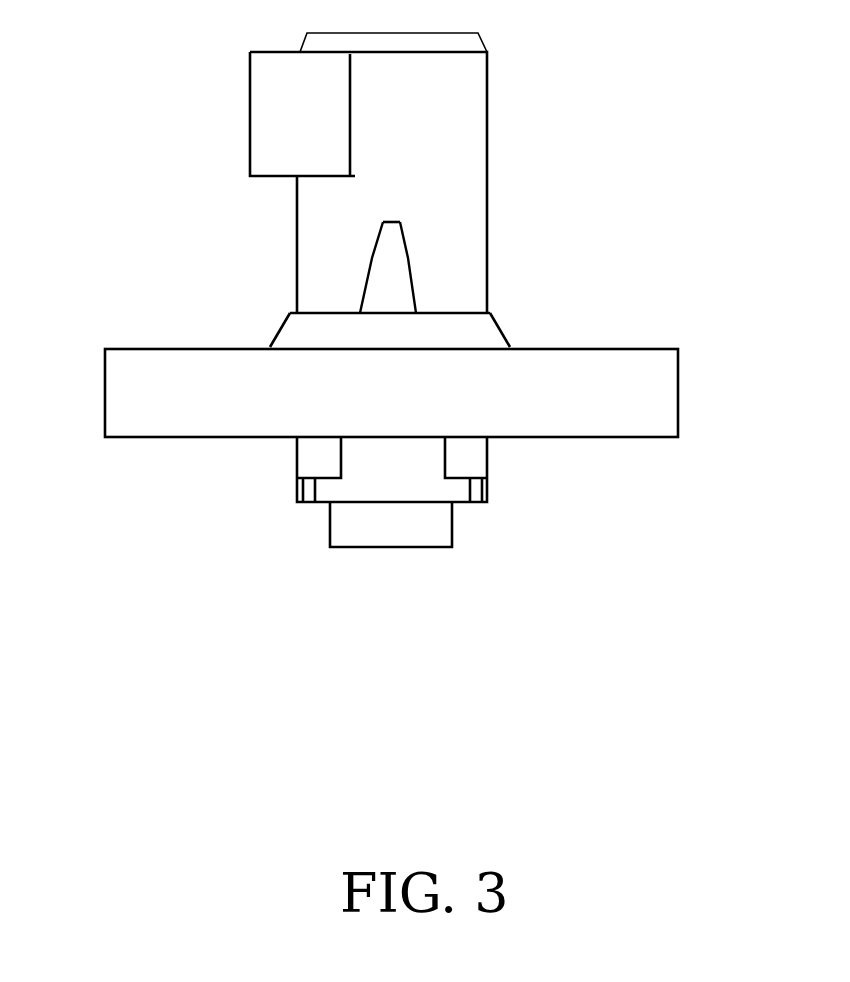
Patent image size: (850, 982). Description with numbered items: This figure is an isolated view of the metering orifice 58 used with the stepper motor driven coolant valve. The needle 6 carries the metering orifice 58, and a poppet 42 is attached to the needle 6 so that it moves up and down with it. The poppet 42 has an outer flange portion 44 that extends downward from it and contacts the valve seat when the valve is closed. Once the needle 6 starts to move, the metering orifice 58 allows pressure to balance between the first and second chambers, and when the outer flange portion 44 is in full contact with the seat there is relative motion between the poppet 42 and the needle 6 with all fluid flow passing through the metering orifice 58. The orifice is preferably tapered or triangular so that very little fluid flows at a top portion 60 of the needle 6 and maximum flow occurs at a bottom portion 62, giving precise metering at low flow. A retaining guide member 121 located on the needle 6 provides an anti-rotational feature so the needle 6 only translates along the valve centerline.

The retaining guide member 121 is at (308, 117).
The needle 6 is at (500, 222).
The top portion 60 is at (400, 222).
The metering orifice 58 is at (393, 268).
The poppet 42 is at (632, 373).
The outer flange portion 44 is at (266, 415).
The bottom portion 62 is at (380, 493).